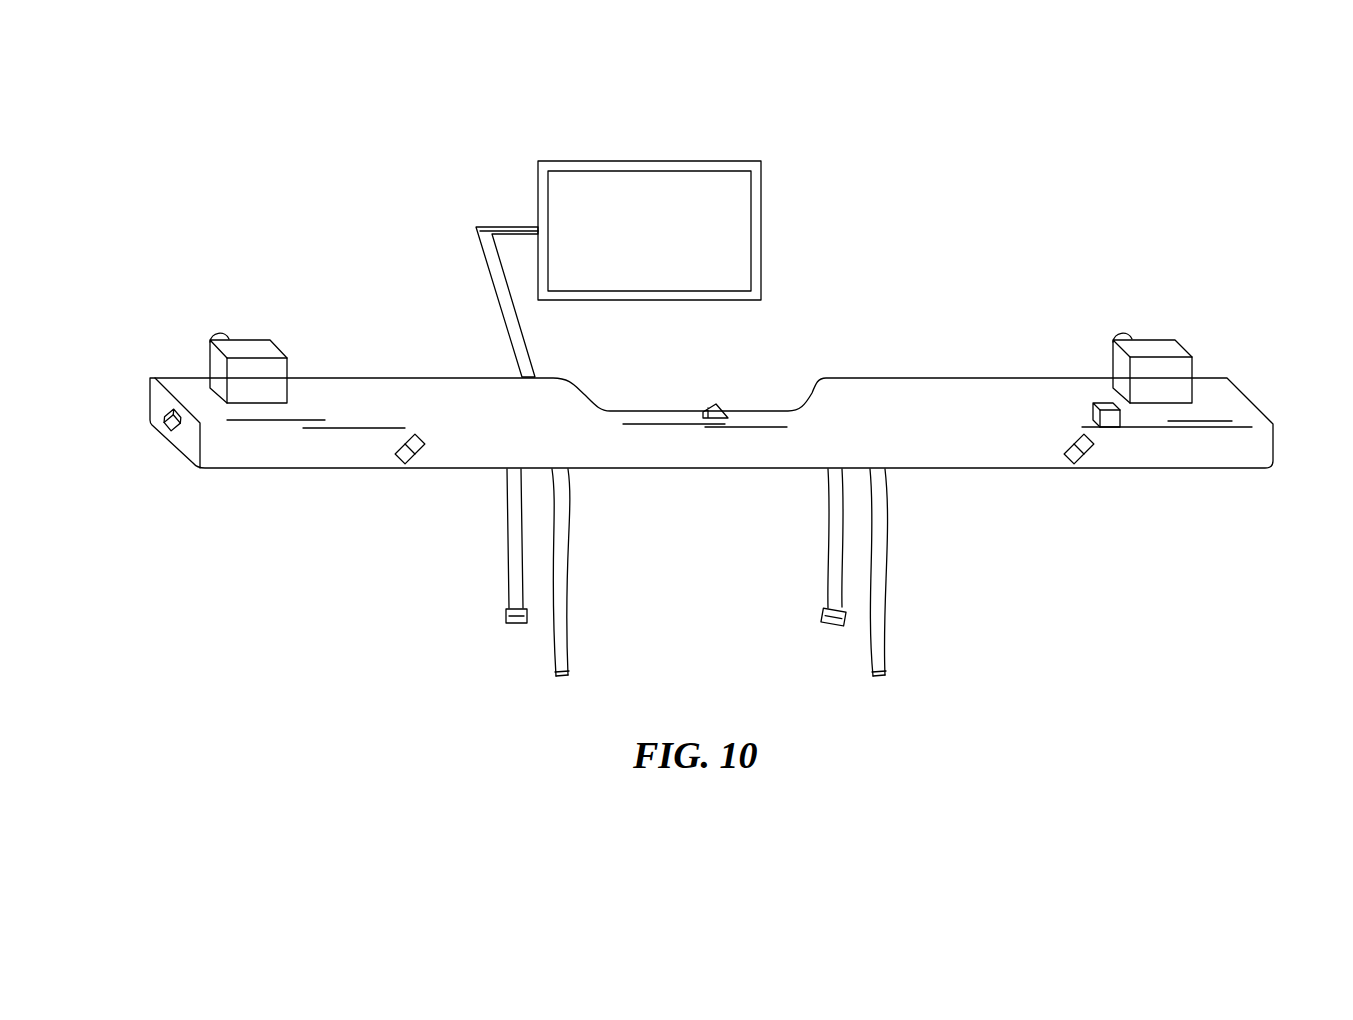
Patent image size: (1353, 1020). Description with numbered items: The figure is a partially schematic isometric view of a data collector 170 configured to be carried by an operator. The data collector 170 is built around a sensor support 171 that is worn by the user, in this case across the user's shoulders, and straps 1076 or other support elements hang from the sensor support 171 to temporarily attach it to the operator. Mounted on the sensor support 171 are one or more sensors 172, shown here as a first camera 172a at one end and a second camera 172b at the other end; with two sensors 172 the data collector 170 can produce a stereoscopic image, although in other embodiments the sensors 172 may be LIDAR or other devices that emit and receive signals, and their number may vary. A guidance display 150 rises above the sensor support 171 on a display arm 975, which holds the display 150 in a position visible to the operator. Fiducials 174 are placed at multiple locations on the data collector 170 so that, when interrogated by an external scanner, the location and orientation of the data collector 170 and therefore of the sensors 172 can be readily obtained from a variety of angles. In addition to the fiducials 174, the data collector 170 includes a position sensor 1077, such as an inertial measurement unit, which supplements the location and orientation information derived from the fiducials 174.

The data collector 170 is at (1167, 170).
The sensor support 171 is at (1238, 402).
The sensors 172 is at (305, 323).
The first camera 172a is at (212, 370).
The second camera 172b is at (1188, 368).
The fiducials 174 is at (165, 424).
The guidance display 150 is at (761, 179).
The display arm 975 is at (483, 255).
The straps 1076 is at (828, 565).
The position sensor 1077 is at (1107, 425).